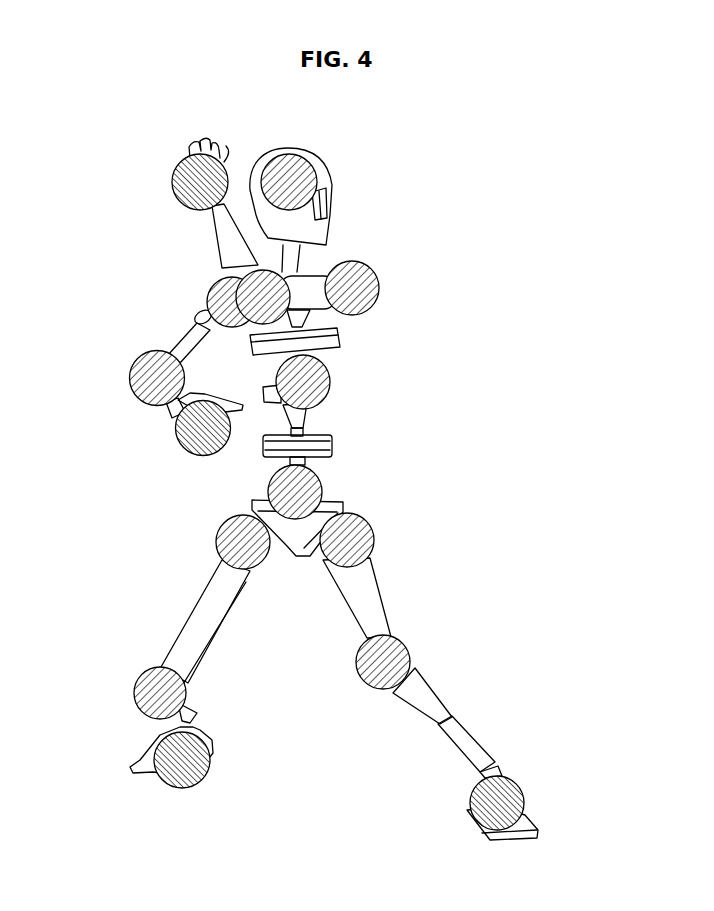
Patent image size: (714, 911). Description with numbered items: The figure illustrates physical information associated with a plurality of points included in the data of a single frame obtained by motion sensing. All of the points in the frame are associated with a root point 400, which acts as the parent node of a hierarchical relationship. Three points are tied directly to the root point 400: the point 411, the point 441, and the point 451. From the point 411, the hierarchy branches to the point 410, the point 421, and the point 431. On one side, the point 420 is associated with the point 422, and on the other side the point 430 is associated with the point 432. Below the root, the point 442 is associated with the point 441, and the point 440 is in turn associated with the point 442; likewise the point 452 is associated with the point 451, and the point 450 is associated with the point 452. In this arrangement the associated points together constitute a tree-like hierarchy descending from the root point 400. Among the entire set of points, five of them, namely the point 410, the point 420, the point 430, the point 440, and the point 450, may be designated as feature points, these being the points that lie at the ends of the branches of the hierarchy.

The root point 400 is at (322, 488).
The point 410 is at (316, 172).
The point 411 is at (330, 381).
The point 420 is at (175, 168).
The point 421 is at (378, 272).
The point 422 is at (285, 273).
The point 430 is at (200, 456).
The point 431 is at (215, 290).
The point 432 is at (130, 376).
The point 440 is at (181, 788).
The point 441 is at (217, 543).
The point 442 is at (135, 692).
The point 450 is at (517, 782).
The point 451 is at (372, 529).
The point 452 is at (410, 657).